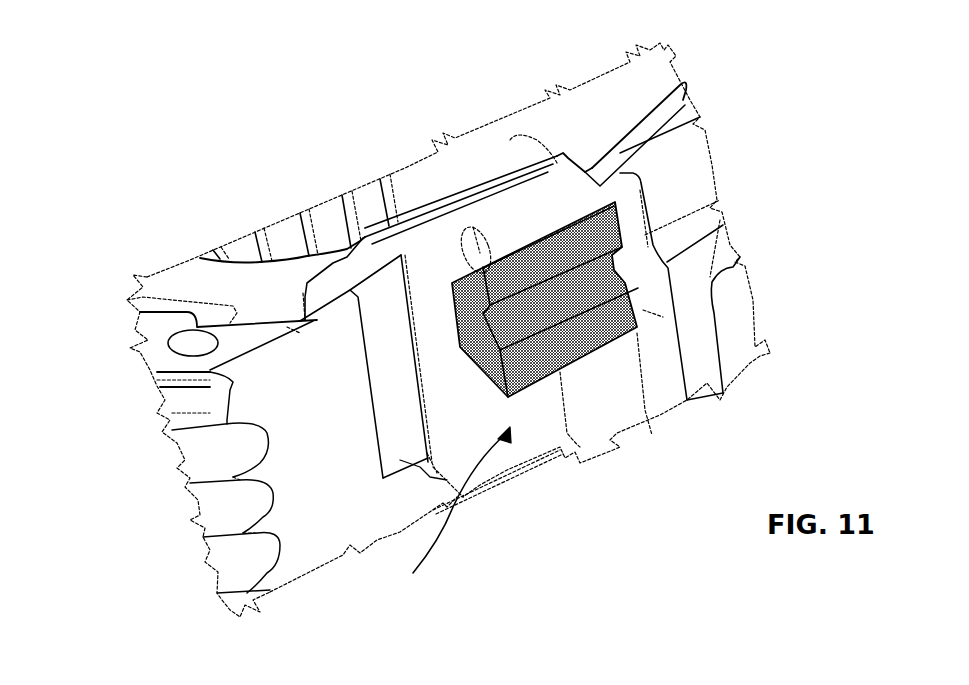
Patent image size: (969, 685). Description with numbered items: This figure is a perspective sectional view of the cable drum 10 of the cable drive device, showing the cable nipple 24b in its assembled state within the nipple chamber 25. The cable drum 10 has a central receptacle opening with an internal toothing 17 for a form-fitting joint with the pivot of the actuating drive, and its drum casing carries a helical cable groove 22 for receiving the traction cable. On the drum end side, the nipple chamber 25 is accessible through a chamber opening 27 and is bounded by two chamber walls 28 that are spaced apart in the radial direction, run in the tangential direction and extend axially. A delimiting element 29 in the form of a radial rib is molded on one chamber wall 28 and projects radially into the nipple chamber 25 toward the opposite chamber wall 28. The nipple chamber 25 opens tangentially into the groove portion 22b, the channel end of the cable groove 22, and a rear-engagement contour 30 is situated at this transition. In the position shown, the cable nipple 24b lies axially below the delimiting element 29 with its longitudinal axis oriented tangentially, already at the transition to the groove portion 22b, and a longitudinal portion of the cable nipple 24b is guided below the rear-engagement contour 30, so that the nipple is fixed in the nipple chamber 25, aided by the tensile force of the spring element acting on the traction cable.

The cable drum 10 is at (167, 283).
The internal toothing 17 is at (328, 213).
The cable groove 22 is at (222, 450).
The groove portion 22b is at (673, 155).
The cable nipple 24b is at (582, 336).
The nipple chamber 25 is at (459, 520).
The chamber opening 27 is at (538, 185).
The chamber wall 28 is at (447, 393).
The delimiting element 29 is at (497, 243).
The rear-engagement contour 30 is at (613, 173).